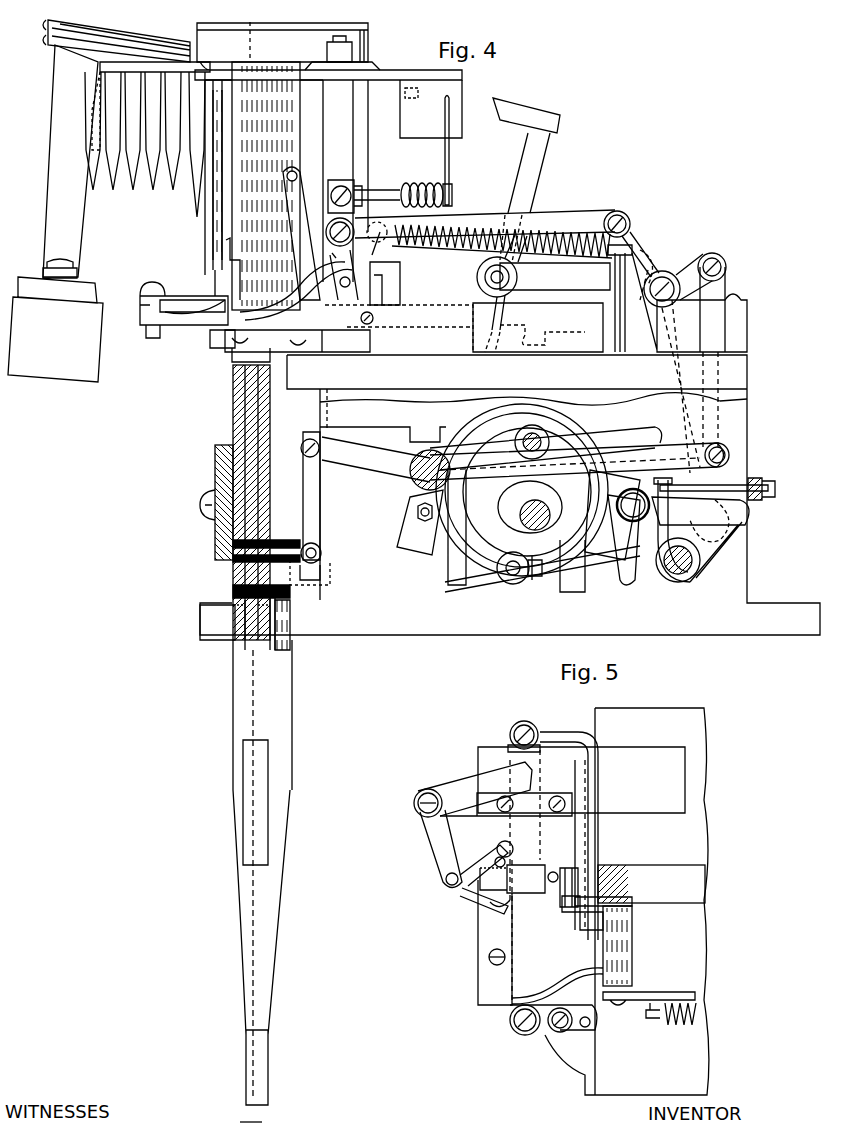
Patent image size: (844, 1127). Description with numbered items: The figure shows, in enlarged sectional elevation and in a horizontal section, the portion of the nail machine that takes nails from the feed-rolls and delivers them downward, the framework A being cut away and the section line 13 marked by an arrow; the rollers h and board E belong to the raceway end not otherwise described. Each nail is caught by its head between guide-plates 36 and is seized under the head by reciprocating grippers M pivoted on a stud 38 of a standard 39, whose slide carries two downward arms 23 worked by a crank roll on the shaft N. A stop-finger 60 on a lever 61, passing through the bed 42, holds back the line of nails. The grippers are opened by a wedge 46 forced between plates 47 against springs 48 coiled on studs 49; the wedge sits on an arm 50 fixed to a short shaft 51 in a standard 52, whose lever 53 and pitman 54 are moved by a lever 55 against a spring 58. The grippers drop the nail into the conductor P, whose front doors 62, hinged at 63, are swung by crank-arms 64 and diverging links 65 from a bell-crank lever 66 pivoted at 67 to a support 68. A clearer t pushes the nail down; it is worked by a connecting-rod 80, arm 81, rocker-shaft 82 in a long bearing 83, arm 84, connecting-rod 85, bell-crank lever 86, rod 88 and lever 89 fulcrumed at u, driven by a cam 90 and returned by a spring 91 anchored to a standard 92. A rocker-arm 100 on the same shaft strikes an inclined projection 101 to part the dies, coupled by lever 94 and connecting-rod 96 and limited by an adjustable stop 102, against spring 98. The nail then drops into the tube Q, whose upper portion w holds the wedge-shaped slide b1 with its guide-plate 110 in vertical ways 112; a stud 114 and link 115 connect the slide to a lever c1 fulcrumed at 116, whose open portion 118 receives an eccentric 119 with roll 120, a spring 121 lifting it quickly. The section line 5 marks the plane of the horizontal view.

In FIG. 4, the section line 13 13 is at (300, 15).
In FIG. 4, the comb h is at (100, 22).
In FIG. 4, the inclined board E is at (48, 58).
In FIG. 4, the framework A is at (55, 320).
In FIG. 4, the stop-finger 60 is at (282, 42).
In FIG. 4, the guide-plates 36 is at (220, 66).
In FIG. 4, the grippers M is at (268, 76).
In FIG. 4, the vertical stud 38 is at (328, 49).
In FIG. 4, the lever 61 is at (366, 50).
In FIG. 4, the plates 47 is at (431, 109).
In FIG. 4, the post or standard 39 is at (345, 181).
In FIG. 5, the post or standard 39 is at (608, 868).
In FIG. 4, the springs 48 is at (450, 160).
In FIG. 4, the horizontal supporting-studs 49 is at (450, 192).
In FIG. 4, the wedge 46 is at (527, 110).
In FIG. 4, the arm 50 is at (525, 197).
In FIG. 4, the section line 5 5 is at (360, 218).
In FIG. 4, the connecting-rod 85 is at (552, 222).
In FIG. 5, the connecting-rod 85 is at (640, 1010).
In FIG. 4, the bell-crank lever 86 is at (650, 268).
In FIG. 4, the rod 88 is at (701, 350).
In FIG. 4, the pitman 54 is at (652, 312).
In FIG. 4, the lever 53 is at (555, 276).
In FIG. 4, the standard 92 is at (616, 300).
In FIG. 4, the short shaft 51 is at (478, 278).
In FIG. 4, the standard 52 is at (485, 294).
In FIG. 4, the spring 58 is at (520, 302).
In FIG. 4, the spring 91 is at (452, 250).
In FIG. 4, the rocker-shaft 82 is at (378, 275).
In FIG. 5, the rocker-shaft 82 is at (632, 901).
In FIG. 4, the long bearing 83 is at (464, 327).
In FIG. 5, the long bearing 83 is at (632, 956).
In FIG. 4, the spring 98 is at (297, 341).
In FIG. 4, the bed 42 is at (510, 495).
In FIG. 4, the conductor P is at (277, 186).
In FIG. 5, the conductor P is at (511, 935).
In FIG. 4, the hinges 63 is at (222, 190).
In FIG. 5, the hinges 63 is at (515, 860).
In FIG. 4, the laterally-swinging doors 62 is at (212, 236).
In FIG. 5, the laterally-swinging doors 62 is at (498, 860).
In FIG. 4, the crank-arms 64 is at (212, 268).
In FIG. 5, the crank-arms 64 is at (500, 846).
In FIG. 4, the diverging links 65 is at (200, 300).
In FIG. 5, the diverging links 65 is at (442, 868).
In FIG. 4, the connecting-rod 80 is at (298, 233).
In FIG. 5, the connecting-rod 80 is at (562, 908).
In FIG. 4, the arm 84 is at (330, 250).
In FIG. 5, the arm 84 is at (632, 988).
In FIG. 4, the arm 81 is at (335, 275).
In FIG. 5, the arm 81 is at (590, 910).
In FIG. 4, the rocker-arm 100 is at (296, 291).
In FIG. 5, the rocker-arm 100 is at (555, 982).
In FIG. 4, the inclined projection 101 is at (225, 345).
In FIG. 5, the inclined projection 101 is at (512, 1015).
In FIG. 4, the wedge-shaped slide b1 is at (232, 430).
In FIG. 4, the link 115 is at (318, 496).
In FIG. 4, the guide-plate 110 is at (305, 530).
In FIG. 4, the stud 114 is at (322, 562).
In FIG. 4, the upper portion of delivery tube w is at (237, 624).
In FIG. 4, the vertical ways 112 is at (292, 628).
In FIG. 4, the delivery tube or conduit Q is at (268, 940).
In FIG. 4, the fulcrum u is at (412, 478).
In FIG. 4, the lever c1 is at (770, 516).
In FIG. 4, the transverse shaft N is at (535, 548).
In FIG. 4, the cam 90 is at (530, 506).
In FIG. 4, the eccentric 119 is at (546, 510).
In FIG. 4, the lever 89 is at (579, 461).
In FIG. 4, the antifriction-roll 120 is at (545, 432).
In FIG. 4, the lever 55 is at (622, 498).
In FIG. 4, the open portion 118 is at (605, 560).
In FIG. 4, the fulcrum 116 is at (632, 560).
In FIG. 4, the downwardly-projecting arms 23 is at (448, 582).
In FIG. 4, the spring 121 is at (702, 560).
In FIG. 5, the connecting-rod 96 is at (552, 728).
In FIG. 5, the adjustable stop 102 is at (510, 740).
In FIG. 5, the pivot 67 is at (418, 796).
In FIG. 5, the bell-crank lever 66 is at (475, 789).
In FIG. 5, the stationary support 68 is at (506, 804).
In FIG. 5, the pusher-rod or clearer t is at (568, 872).
In FIG. 5, the lever 94 is at (555, 1034).